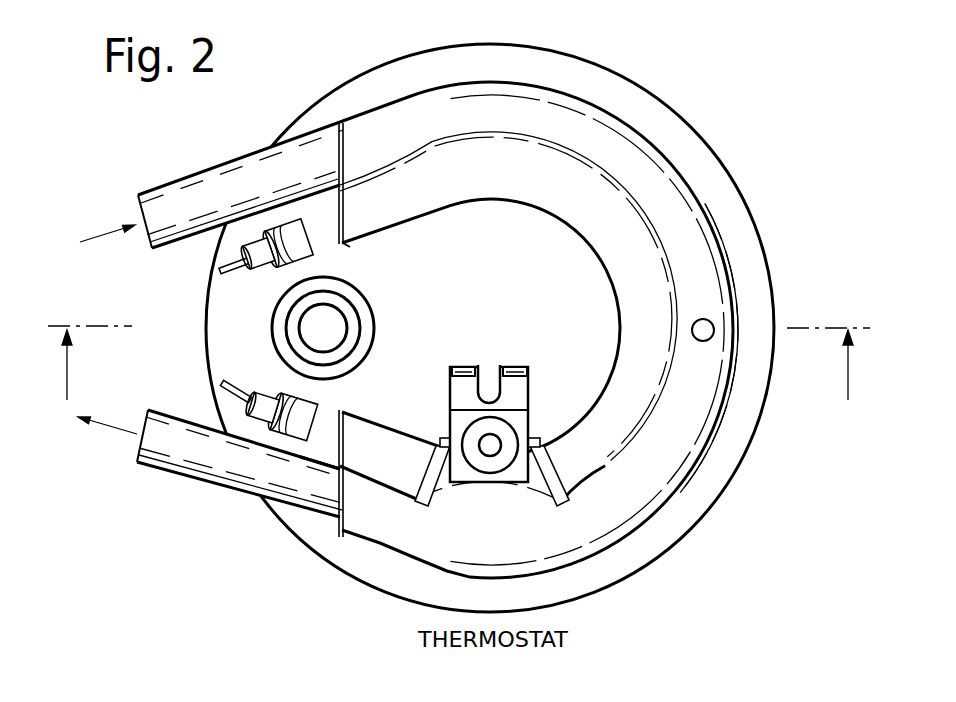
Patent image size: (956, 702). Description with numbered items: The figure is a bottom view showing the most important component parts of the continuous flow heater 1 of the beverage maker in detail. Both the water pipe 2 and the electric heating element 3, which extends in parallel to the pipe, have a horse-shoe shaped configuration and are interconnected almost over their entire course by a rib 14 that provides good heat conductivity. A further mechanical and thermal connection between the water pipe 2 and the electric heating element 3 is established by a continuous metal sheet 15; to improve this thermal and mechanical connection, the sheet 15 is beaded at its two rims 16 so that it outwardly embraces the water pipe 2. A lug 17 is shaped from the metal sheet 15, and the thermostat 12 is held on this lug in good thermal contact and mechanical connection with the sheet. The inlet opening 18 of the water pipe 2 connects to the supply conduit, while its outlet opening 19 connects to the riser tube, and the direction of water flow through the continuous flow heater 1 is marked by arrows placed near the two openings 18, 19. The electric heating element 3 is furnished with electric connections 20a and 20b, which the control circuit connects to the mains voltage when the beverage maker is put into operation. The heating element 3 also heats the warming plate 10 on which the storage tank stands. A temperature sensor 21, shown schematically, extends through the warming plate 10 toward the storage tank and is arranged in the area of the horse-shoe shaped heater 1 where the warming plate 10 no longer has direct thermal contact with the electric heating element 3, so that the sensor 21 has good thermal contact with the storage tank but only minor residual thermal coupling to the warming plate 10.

The continuous flow heater 1 is at (745, 164).
The water pipe 2 is at (231, 482).
The electric heating element 3 is at (322, 420).
The warming plate 10 is at (684, 510).
The thermostat 12 is at (460, 423).
The rib 14 is at (495, 174).
The continuous metal sheet 15 is at (603, 256).
The rims 16 is at (382, 116).
The lug 17 is at (520, 390).
The inlet opening 18 is at (134, 210).
The outlet opening 19 is at (137, 448).
The electric connection 20a is at (221, 269).
The electric connection 20b is at (222, 389).
The temperature sensor 21 is at (380, 293).